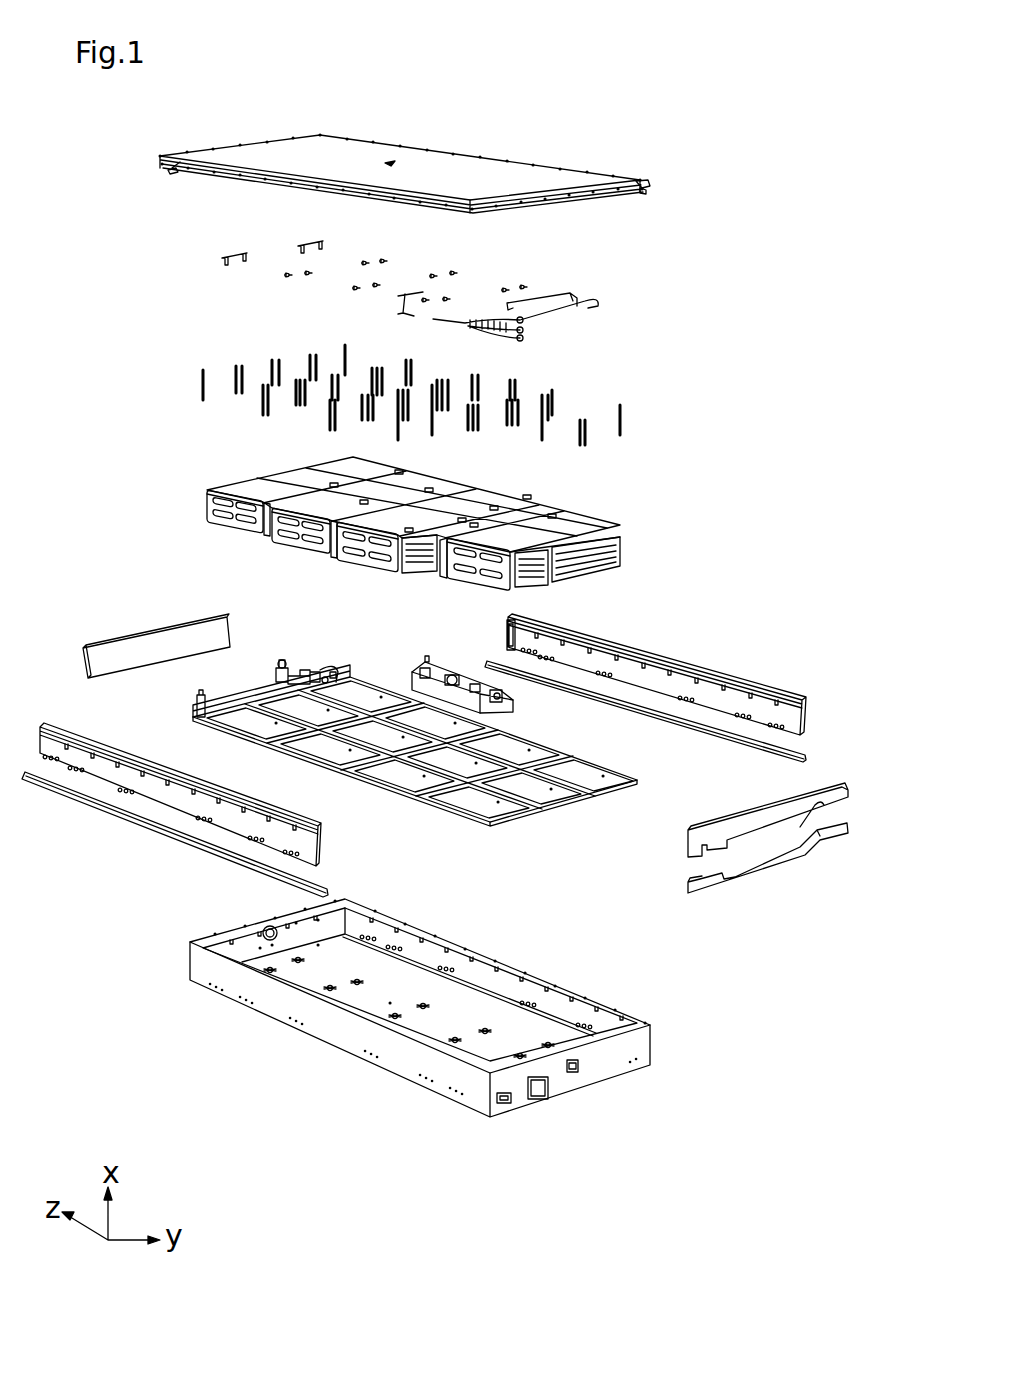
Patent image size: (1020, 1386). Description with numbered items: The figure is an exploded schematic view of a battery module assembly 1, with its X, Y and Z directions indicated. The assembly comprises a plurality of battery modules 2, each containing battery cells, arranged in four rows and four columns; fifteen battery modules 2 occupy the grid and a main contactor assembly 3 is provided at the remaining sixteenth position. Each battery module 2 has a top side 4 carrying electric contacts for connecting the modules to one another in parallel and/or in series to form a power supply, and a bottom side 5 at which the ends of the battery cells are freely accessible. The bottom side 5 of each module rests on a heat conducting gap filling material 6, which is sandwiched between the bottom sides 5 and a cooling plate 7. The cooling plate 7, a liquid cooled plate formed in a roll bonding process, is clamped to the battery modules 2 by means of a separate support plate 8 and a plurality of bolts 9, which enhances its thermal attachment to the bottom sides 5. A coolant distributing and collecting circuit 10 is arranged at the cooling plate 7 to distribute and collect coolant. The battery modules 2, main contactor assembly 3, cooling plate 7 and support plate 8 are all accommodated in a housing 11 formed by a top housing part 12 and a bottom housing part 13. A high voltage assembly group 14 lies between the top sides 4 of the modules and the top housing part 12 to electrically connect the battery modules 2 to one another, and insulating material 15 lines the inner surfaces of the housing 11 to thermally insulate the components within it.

The battery module assembly 1 is at (90, 395).
The battery module 2 is at (433, 530).
The main contactor assembly 3 is at (500, 698).
The top side 4 is at (433, 530).
The bottom side 5 is at (540, 577).
The heat conducting gap filling material 6 is at (416, 779).
The cooling plate 7 is at (487, 817).
The support plate 8 is at (495, 1017).
The bolts 9 is at (655, 375).
The coolant distributing and collecting circuit 10 is at (307, 662).
The housing 11 is at (405, 639).
The top housing part 12 is at (523, 178).
The bottom housing part 13 is at (420, 1038).
The high voltage assembly group 14 is at (655, 228).
The insulating material 15 is at (37, 743).